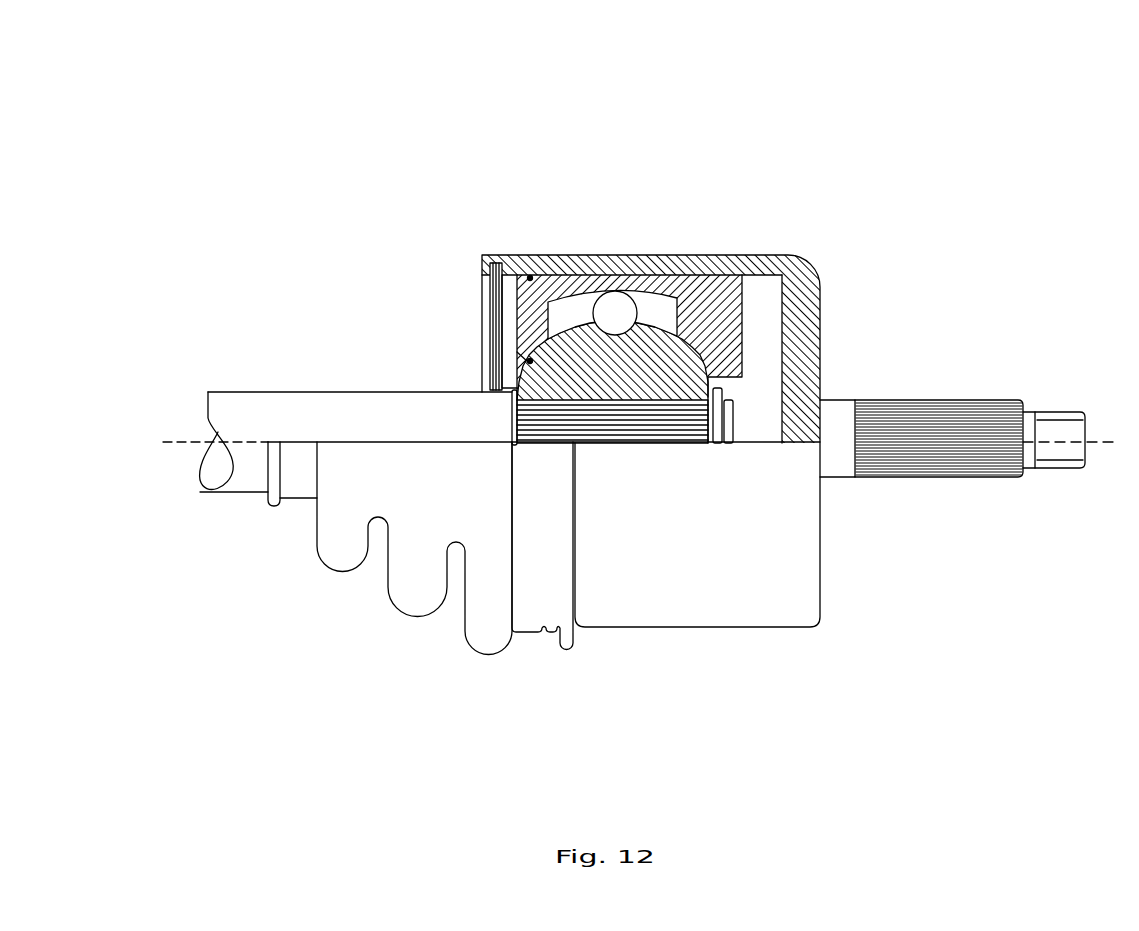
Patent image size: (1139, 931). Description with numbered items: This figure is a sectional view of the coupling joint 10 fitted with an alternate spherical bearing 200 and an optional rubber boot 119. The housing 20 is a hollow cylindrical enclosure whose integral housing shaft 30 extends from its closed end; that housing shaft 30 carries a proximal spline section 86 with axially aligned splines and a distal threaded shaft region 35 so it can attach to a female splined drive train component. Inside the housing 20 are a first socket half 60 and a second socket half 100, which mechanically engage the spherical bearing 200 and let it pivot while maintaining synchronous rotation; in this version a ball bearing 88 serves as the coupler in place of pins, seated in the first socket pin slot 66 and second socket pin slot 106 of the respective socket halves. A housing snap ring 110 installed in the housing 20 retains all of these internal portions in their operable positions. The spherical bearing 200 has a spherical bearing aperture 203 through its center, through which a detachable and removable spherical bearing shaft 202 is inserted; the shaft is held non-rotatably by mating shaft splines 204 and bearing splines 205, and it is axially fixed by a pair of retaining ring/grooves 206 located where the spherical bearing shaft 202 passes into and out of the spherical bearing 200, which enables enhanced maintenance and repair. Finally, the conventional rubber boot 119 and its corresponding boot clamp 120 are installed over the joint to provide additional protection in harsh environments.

The coupling joint 10 is at (1034, 127).
The housing 20 is at (772, 258).
The housing shaft 30 is at (840, 395).
The threaded shaft region 35 is at (1057, 415).
The first socket half 60 is at (715, 293).
The first socket pin slot 66 is at (651, 310).
The spline section 86 is at (937, 412).
The ball bearing 88 is at (617, 310).
The second socket half 100 is at (560, 285).
The second socket pin slot 106 is at (492, 266).
The housing snap ring 110 is at (488, 308).
The rubber boot 119 is at (345, 573).
The boot clamp 120 is at (553, 627).
The spherical bearing 200 is at (613, 372).
The spherical bearing shaft 202 is at (353, 418).
The spherical bearing aperture 203 is at (670, 400).
The shaft splines 204 is at (640, 432).
The bearing splines 205 is at (667, 427).
The retaining ring/grooves 206 is at (513, 413).